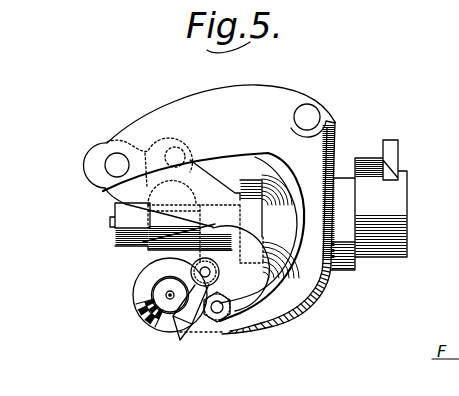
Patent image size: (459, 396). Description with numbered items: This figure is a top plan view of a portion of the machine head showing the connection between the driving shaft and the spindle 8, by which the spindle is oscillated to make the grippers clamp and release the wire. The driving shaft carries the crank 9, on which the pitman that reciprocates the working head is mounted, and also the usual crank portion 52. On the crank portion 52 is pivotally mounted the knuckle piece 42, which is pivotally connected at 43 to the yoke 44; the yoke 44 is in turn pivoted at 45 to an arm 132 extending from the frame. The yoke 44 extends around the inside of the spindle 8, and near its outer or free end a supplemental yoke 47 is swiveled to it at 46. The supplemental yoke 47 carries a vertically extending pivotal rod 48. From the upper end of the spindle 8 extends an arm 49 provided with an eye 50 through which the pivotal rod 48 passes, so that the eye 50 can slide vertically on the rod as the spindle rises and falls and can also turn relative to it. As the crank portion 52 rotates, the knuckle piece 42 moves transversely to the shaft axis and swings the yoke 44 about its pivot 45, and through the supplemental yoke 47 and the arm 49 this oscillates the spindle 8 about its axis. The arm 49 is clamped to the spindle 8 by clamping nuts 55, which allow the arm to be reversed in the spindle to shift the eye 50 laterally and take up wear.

The arm 132 is at (258, 108).
The pivot 45 is at (107, 143).
The pivotal connection 43 is at (175, 150).
The knuckle piece 42 is at (148, 194).
The crank 9 is at (146, 250).
The crank portion 52 is at (112, 221).
The yoke 44 is at (178, 253).
The arm 49 is at (148, 270).
The spindle 8 is at (157, 323).
The clamping nuts 55 is at (147, 304).
The supplemental yoke 47 is at (203, 276).
The swivel 46 is at (218, 322).
The pivotal rod 48 is at (192, 283).
The eye 50 is at (417, 384).